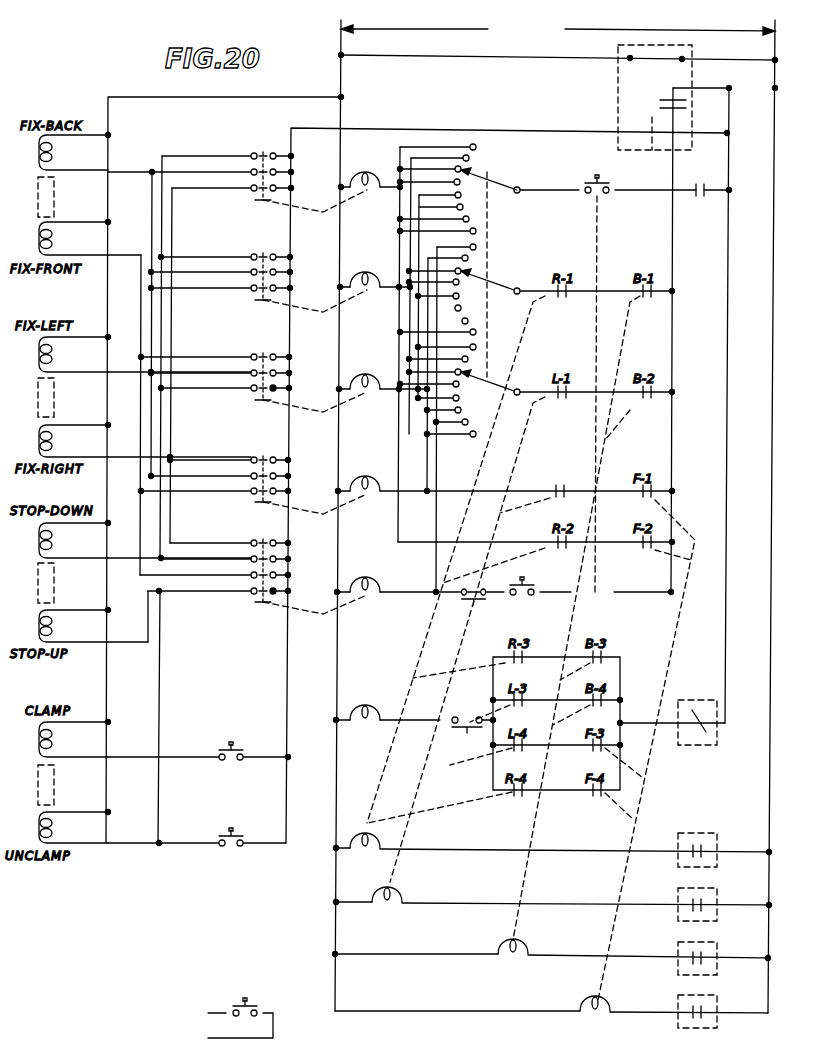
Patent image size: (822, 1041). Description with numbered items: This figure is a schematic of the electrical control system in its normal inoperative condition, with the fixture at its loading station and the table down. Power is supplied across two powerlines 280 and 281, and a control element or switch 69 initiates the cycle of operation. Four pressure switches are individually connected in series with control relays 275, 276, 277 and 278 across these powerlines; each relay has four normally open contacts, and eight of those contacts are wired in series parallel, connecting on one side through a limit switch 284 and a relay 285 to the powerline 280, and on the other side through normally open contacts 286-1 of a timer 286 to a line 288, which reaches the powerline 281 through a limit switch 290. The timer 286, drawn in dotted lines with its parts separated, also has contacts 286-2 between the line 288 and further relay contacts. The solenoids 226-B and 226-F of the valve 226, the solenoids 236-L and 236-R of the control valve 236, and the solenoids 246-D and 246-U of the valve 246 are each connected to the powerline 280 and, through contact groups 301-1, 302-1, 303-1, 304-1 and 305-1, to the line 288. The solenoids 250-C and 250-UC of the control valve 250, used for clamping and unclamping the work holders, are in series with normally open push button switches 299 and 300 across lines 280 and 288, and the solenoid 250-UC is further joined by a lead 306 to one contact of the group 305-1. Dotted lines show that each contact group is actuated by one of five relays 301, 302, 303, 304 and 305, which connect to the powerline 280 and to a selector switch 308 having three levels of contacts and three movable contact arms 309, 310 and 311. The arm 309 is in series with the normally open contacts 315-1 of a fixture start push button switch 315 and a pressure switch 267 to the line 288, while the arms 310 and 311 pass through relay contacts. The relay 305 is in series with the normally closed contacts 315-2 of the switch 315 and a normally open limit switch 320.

The solenoid 226-B is at (75, 152).
The valve 226 is at (78, 200).
The solenoid 226-F is at (75, 238).
The solenoid 236-L is at (75, 354).
The control valve 236 is at (78, 400).
The solenoid 236-R is at (75, 440).
The solenoid 246-D is at (75, 540).
The valve 246 is at (78, 586).
The solenoid 246-U is at (75, 625).
The solenoid 250-C is at (75, 739).
The control valve 250 is at (78, 788).
The solenoid 250-UC is at (77, 827).
The relay 301 is at (371, 176).
The group of contacts 301-1 is at (280, 187).
The relay 302 is at (375, 276).
The group of contacts 302-1 is at (278, 287).
The relay 303 is at (383, 377).
The group of contacts 303-1 is at (278, 385).
The relay 304 is at (505, 480).
The group of contacts 304-1 is at (278, 485).
The relay 305 is at (453, 580).
The group of contacts 305-1 is at (276, 570).
The lead 306 is at (159, 700).
The push button switch 299 is at (249, 737).
The push button switch 300 is at (249, 824).
The powerline 280 is at (341, 43).
The powerline 281 is at (775, 42).
The line 288 is at (396, 112).
The timer 286 is at (618, 90).
The contacts of timer 286-2 is at (648, 112).
The normally open contacts of timer 286-1 is at (706, 740).
The limit switch 290 is at (752, 97).
The pressure switch 267 is at (710, 200).
The fixture start push button switch 315 is at (614, 186).
The normally open contacts 315-1 is at (603, 196).
The normally closed contacts 315-2 is at (568, 589).
The selector switch 308 is at (490, 178).
The movable contact arm 309 is at (488, 186).
The movable contact arm 310 is at (488, 286).
The movable contact arm 311 is at (484, 388).
The limit switch 320 is at (520, 579).
The relay 285 is at (387, 706).
The limit switch 284 is at (470, 720).
The control relay 278 is at (553, 845).
The control relay 277 is at (553, 897).
The control relay 276 is at (552, 952).
The control relay 275 is at (551, 1009).
The switch 69 is at (243, 1003).